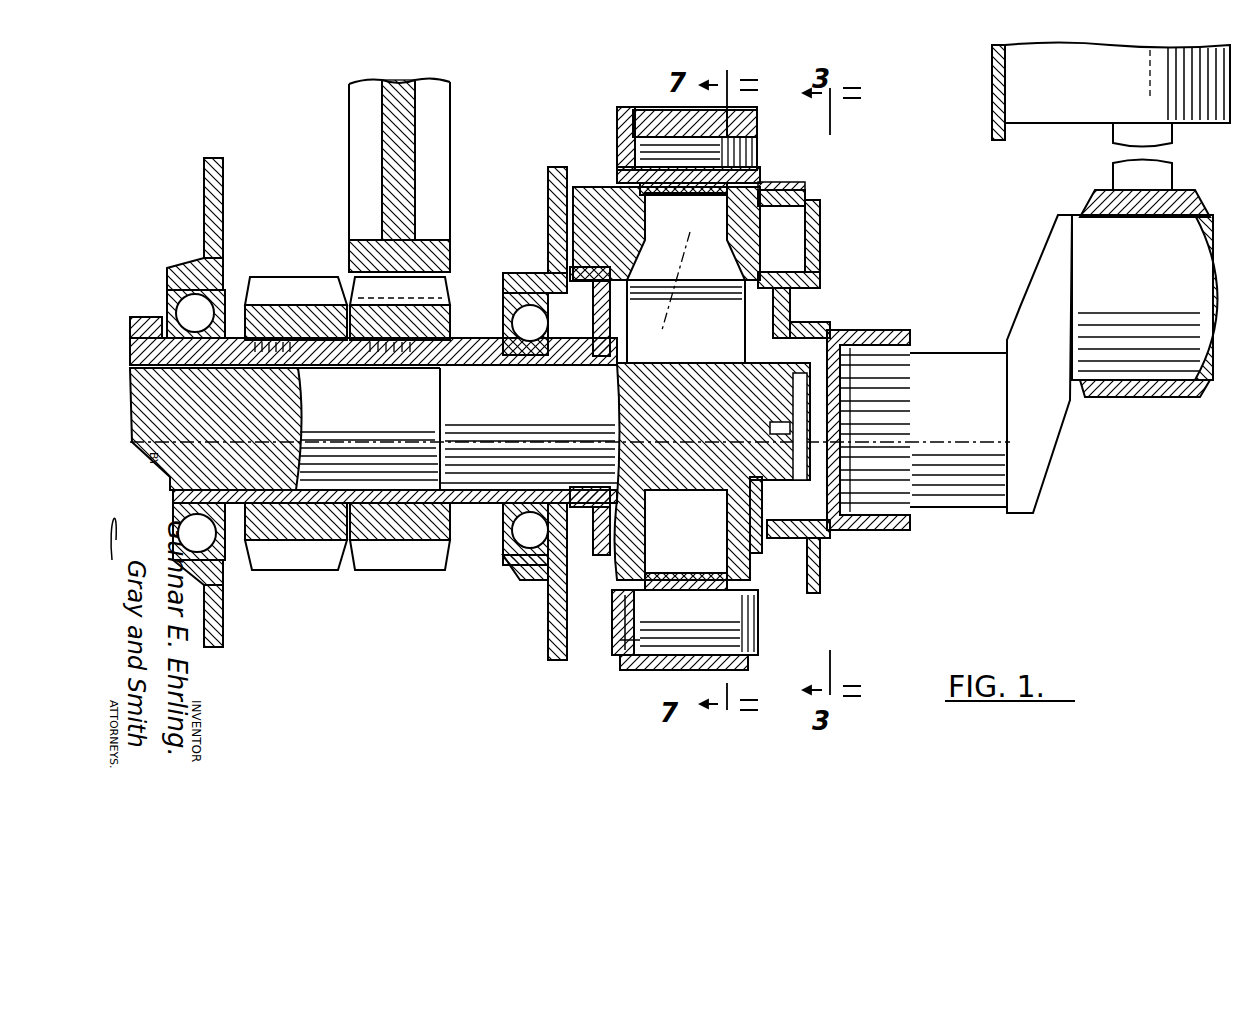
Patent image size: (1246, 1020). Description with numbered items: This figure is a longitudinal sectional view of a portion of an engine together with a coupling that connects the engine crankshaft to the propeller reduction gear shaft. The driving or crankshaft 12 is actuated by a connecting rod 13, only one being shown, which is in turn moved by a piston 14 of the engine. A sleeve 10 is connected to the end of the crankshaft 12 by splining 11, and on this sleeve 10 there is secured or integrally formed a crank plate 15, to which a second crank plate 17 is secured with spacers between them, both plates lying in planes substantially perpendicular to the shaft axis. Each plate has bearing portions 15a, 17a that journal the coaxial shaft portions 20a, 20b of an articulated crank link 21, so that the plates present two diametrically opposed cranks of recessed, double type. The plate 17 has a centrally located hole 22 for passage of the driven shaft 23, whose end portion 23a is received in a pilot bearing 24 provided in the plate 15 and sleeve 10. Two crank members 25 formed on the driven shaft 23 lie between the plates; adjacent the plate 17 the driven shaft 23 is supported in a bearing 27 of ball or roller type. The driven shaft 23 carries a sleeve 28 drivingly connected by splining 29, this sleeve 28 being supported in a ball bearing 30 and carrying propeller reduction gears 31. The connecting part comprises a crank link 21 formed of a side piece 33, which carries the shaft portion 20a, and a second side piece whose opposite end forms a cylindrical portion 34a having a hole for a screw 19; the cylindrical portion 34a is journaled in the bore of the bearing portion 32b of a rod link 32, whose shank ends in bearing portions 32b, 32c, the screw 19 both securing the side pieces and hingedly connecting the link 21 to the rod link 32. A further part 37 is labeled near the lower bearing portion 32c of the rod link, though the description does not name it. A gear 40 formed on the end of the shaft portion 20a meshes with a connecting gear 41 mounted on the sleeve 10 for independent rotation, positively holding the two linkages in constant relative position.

The sleeve 10 is at (846, 332).
The splining 11 is at (912, 355).
The driving or crankshaft 12 is at (1040, 462).
The connecting rod 13 is at (1112, 168).
The piston 14 is at (1003, 108).
The crank plate 15 is at (818, 288).
The bearing portion 15a is at (800, 195).
The second crank plate 17 is at (600, 298).
The bearing portion 17a is at (583, 185).
The screw 19 is at (617, 150).
The shaft portion 20a is at (788, 232).
The shaft portion 20b is at (572, 212).
The articulated crank link 21 is at (758, 130).
The centrally located hole 22 is at (590, 482).
The driven shaft 23 is at (498, 538).
The end portion of the driven shaft 23a is at (822, 530).
The pilot bearing 24 is at (786, 420).
The crank member 25 is at (640, 530).
The bearing 27 is at (512, 310).
The sleeve 28 is at (140, 346).
The splining 29 is at (300, 450).
The ball bearing 30 is at (172, 284).
The propeller reduction gears 31 is at (352, 255).
The rod link 32 is at (686, 278).
The bearing portion 32b is at (648, 105).
The bearing portion 32c is at (653, 668).
The side piece 33 is at (762, 178).
The cylindrical portion 34a is at (730, 112).
The shoulder 37 is at (637, 640).
The gear 40 is at (818, 208).
The connecting gear 41 is at (826, 292).